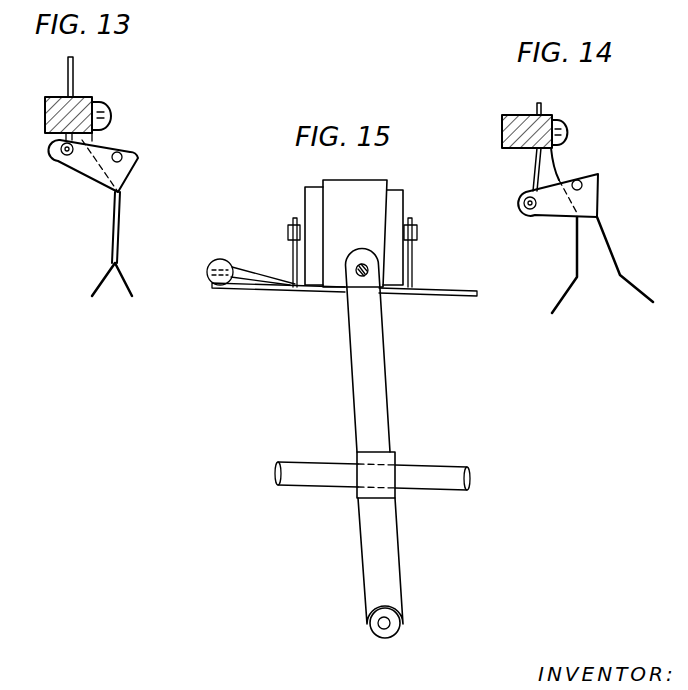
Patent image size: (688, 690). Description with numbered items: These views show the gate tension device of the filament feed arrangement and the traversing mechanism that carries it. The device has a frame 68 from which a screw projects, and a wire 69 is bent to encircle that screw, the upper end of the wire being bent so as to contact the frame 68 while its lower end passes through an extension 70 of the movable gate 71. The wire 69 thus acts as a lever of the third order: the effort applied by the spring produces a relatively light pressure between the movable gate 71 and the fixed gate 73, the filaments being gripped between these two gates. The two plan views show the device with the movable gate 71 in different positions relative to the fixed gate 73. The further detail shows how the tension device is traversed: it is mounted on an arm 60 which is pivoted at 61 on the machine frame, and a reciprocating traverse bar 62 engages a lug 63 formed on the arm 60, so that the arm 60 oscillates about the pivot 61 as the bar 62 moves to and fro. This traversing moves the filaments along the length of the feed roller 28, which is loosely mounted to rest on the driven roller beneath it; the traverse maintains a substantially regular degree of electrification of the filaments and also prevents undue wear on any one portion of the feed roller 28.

In FIG. 15, the feed roller 28 is at (378, 205).
In FIG. 15, the arm 60 is at (385, 412).
In FIG. 15, the pivot 61 is at (375, 622).
In FIG. 15, the reciprocating traverse bar 62 is at (437, 475).
In FIG. 15, the lug 63 is at (357, 455).
In FIG. 13, the frame 68 is at (56, 102).
In FIG. 14, the frame 68 is at (506, 130).
In FIG. 13, the wire 69 is at (73, 88).
In FIG. 14, the wire 69 is at (531, 168).
In FIG. 13, the extension 70 is at (84, 176).
In FIG. 14, the extension 70 is at (546, 210).
In FIG. 13, the movable gate 71 is at (128, 282).
In FIG. 14, the movable gate 71 is at (624, 273).
In FIG. 13, the fixed gate 73 is at (98, 283).
In FIG. 14, the fixed gate 73 is at (568, 297).